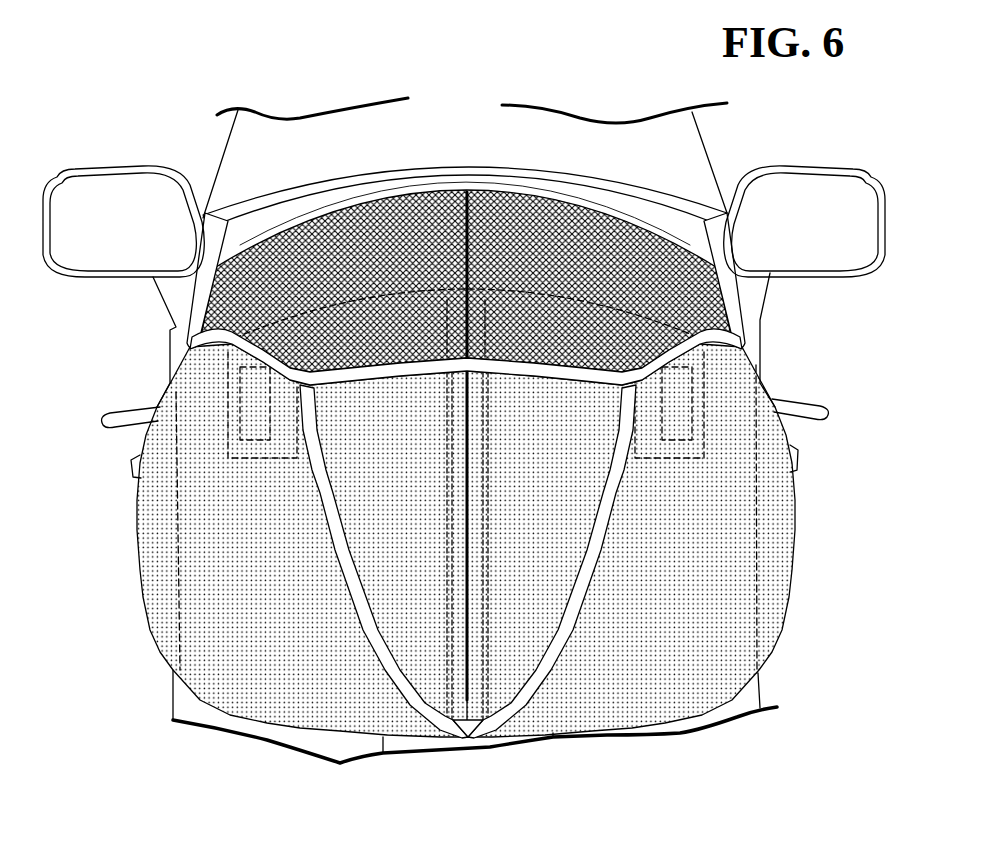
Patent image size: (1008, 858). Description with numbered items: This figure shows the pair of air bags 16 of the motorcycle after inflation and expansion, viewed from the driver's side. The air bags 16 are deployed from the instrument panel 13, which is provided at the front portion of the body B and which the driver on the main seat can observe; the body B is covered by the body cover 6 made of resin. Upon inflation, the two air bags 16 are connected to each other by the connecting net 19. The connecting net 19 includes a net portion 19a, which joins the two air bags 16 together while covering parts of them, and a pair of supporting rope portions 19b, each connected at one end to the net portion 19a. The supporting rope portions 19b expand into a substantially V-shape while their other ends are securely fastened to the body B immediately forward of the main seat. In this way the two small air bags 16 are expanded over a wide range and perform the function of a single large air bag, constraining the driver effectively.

The body cover 6 is at (220, 720).
The instrument panel 13 is at (753, 346).
The air bag 16 is at (136, 560).
The connecting net 19 is at (573, 643).
The net portion 19a is at (526, 362).
The supporting rope portion 19b is at (610, 517).
The body B is at (170, 688).